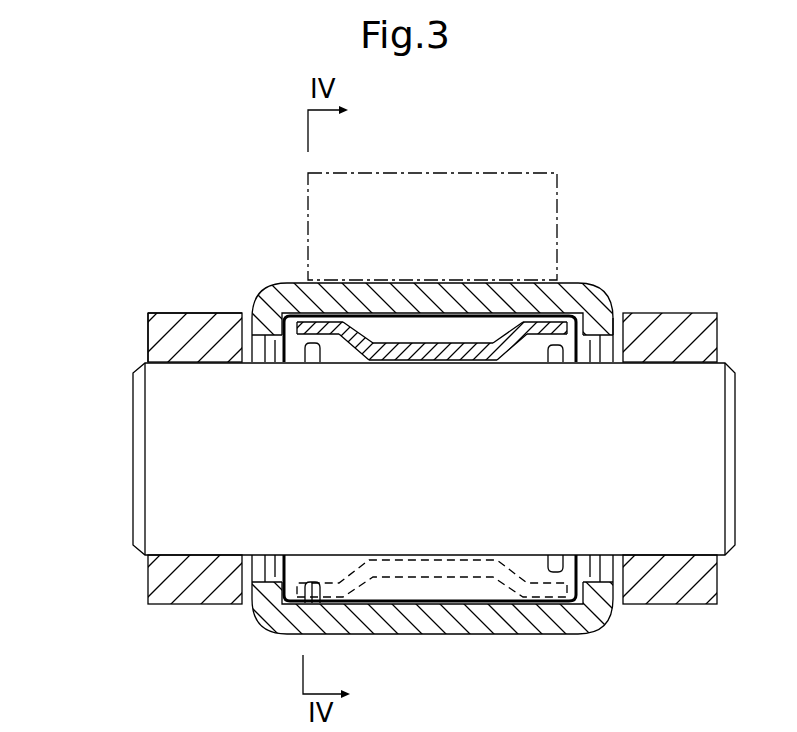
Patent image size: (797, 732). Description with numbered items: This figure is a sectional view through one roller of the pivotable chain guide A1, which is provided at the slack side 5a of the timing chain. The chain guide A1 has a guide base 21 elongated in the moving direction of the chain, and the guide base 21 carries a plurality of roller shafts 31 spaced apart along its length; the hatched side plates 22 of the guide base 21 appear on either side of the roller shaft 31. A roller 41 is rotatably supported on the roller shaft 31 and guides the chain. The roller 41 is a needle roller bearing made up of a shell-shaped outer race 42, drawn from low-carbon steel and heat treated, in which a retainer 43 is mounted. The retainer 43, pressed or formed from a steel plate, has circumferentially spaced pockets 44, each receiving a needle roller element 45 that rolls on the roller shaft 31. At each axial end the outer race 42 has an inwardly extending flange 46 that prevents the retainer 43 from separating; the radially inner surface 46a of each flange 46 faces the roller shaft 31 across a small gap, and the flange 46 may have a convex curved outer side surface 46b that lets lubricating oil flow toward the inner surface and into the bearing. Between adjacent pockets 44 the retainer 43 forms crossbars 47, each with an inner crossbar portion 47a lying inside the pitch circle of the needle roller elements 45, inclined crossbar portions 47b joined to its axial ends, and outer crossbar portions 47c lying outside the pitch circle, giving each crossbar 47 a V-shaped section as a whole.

The slack side 5a is at (537, 178).
The guide base 21 is at (183, 304).
The side plates 22 is at (157, 337).
The roller shaft 31 is at (155, 478).
The roller 41 is at (271, 281).
The outer race 42 is at (430, 300).
The retainer 43 is at (336, 300).
The pocket 44 is at (313, 597).
The needle roller element 45 is at (467, 327).
The flange 46 is at (454, 431).
The radially inner surface 46a is at (268, 337).
The convex curved outer side surface 46b is at (617, 325).
The crossbar 47 is at (433, 458).
The inner crossbar portion 47a is at (420, 362).
The inclined crossbar portion 47b is at (353, 358).
The outer crossbar portion 47c is at (331, 334).
The chain guide A1 is at (144, 303).